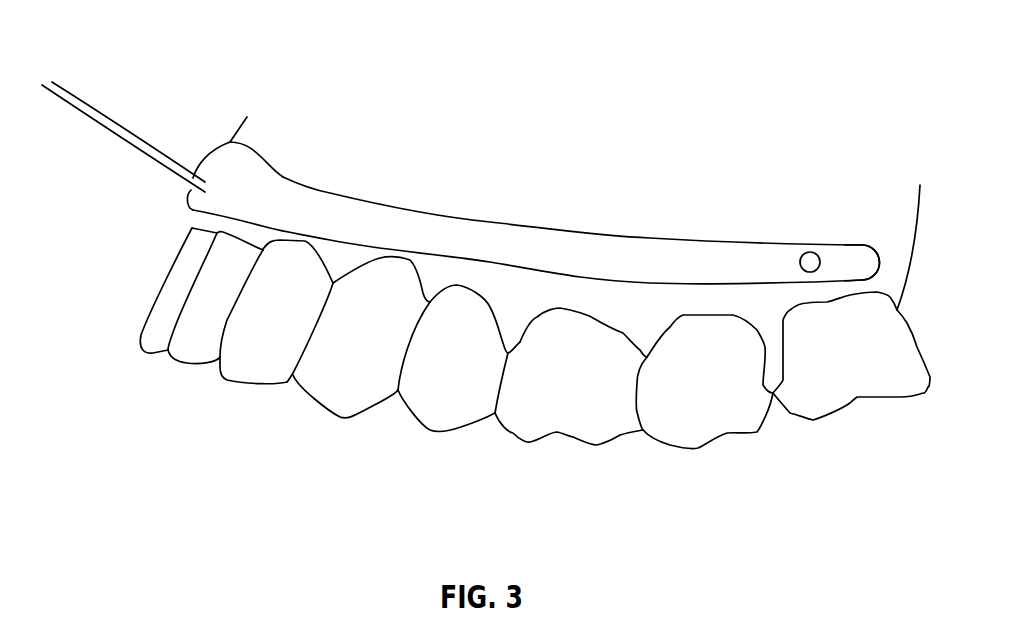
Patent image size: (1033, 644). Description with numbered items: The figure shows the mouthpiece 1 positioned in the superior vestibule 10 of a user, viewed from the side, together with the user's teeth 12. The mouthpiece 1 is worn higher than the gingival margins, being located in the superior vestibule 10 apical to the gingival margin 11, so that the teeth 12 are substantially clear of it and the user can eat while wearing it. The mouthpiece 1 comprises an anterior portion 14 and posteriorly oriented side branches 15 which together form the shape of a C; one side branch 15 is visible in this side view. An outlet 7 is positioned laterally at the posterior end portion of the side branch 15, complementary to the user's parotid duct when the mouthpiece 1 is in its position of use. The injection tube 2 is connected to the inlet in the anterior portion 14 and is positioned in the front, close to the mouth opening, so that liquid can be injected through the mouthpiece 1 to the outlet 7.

The superior vestibule 10 is at (550, 110).
The mouthpiece 1 is at (285, 177).
The injection tube 2 is at (90, 138).
The anterior portion 14 is at (218, 163).
The side branch 15 is at (737, 260).
The outlet 7 is at (810, 251).
The gingival margin 11 is at (183, 225).
The teeth 12 is at (427, 450).